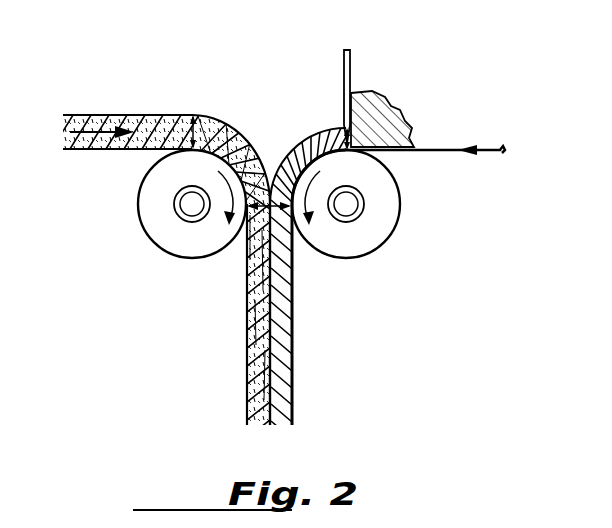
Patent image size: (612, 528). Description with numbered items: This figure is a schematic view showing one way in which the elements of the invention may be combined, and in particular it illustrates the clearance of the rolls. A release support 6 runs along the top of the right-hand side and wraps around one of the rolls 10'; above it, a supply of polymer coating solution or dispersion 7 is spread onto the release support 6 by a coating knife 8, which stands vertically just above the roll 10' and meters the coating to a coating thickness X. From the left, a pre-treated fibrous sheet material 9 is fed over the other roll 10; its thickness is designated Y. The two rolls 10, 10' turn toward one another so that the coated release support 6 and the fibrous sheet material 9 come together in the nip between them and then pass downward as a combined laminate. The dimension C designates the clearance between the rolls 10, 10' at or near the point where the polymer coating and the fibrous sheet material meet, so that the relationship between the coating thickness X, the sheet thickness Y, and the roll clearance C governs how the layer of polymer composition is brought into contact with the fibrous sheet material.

The release support 6 is at (490, 152).
The polymer coating solution or dispersion 7 is at (385, 120).
The coating knife 8 is at (348, 70).
The pre-treated fibrous sheet material 9 is at (100, 115).
The roll 10 is at (169, 205).
The roll 10' is at (393, 204).
The coating thickness X is at (344, 128).
The thickness of the pre-treated fibrous sheet material Y is at (186, 125).
The clearance C is at (249, 252).